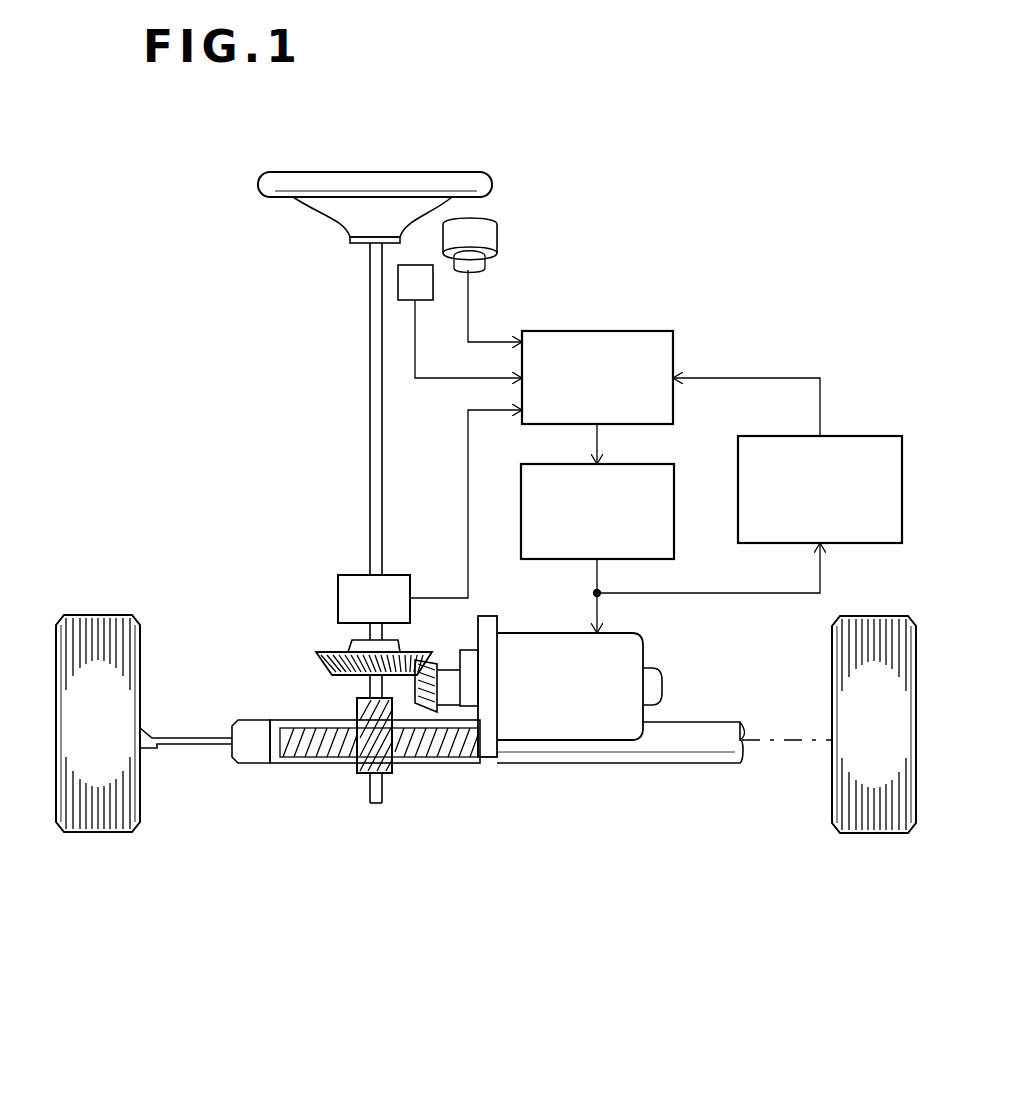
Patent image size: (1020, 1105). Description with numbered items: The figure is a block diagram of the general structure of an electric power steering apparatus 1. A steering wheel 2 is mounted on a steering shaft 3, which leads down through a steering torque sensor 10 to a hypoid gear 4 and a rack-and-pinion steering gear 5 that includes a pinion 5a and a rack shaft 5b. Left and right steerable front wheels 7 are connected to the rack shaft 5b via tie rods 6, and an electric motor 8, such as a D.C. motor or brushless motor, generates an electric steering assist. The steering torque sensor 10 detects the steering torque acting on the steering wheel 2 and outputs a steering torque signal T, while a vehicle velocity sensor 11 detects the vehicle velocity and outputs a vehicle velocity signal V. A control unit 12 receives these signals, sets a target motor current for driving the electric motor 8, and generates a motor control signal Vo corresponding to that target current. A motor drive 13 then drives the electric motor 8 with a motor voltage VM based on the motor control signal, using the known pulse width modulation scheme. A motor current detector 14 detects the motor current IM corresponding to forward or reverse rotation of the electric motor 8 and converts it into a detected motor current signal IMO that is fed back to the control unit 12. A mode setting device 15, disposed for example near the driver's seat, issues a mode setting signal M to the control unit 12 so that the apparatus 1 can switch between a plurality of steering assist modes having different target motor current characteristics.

The electric power steering apparatus 1 is at (381, 105).
The steering wheel 2 is at (447, 172).
The steering shaft 3 is at (370, 382).
The hypoid gear 4 is at (417, 703).
The rack-and-pinion steering gear 5 is at (345, 773).
The pinion 5a is at (392, 773).
The rack shaft 5b is at (690, 742).
The tie rods 6 is at (190, 745).
The steerable front wheels 7 is at (93, 615).
The electric motor 8 is at (643, 645).
The steering torque sensor 10 is at (338, 598).
The vehicle velocity sensor 11 is at (480, 231).
The control unit 12 is at (610, 331).
The motor drive 13 is at (645, 464).
The motor current detector 14 is at (845, 436).
The mode setting device 15 is at (433, 285).